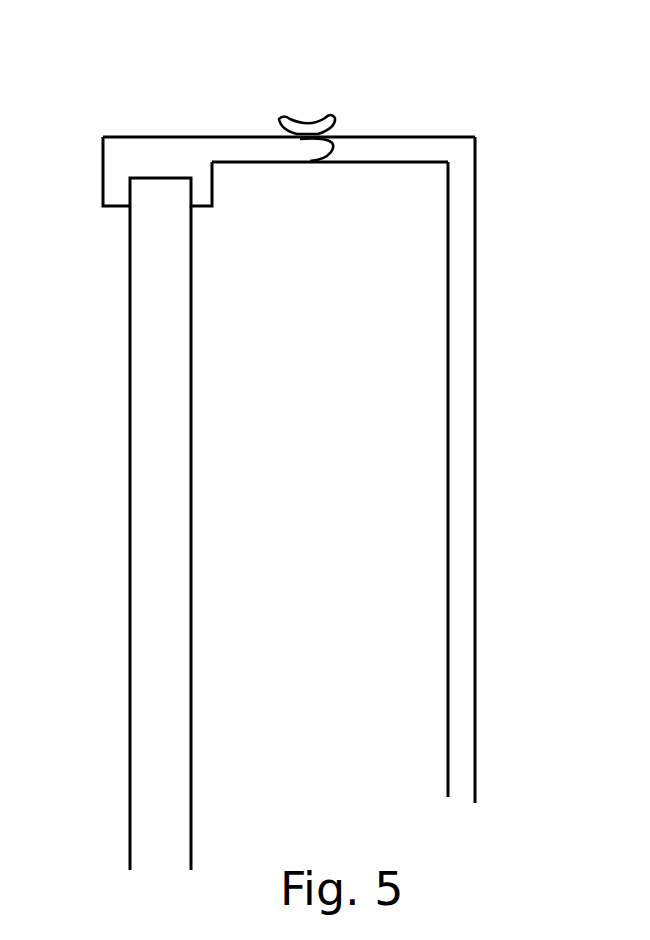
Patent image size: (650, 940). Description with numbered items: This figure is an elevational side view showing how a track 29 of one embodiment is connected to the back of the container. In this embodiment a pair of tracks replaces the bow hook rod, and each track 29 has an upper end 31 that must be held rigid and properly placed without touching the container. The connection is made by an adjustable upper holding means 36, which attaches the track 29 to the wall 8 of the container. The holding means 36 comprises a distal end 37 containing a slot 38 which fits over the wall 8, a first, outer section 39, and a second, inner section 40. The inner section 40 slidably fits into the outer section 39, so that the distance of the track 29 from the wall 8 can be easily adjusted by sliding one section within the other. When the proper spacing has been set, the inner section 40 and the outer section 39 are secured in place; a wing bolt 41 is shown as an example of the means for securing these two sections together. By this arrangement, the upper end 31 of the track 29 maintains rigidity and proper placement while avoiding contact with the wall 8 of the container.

The adjustable upper holding means 36 is at (487, 108).
The distal end 37 is at (165, 137).
The slot 38 is at (158, 182).
The first, outer section 39 is at (213, 137).
The second, inner section 40 is at (417, 137).
The wing bolt 41 is at (294, 120).
The upper end 31 is at (475, 205).
The track 29 is at (463, 590).
The wall 8 is at (152, 540).